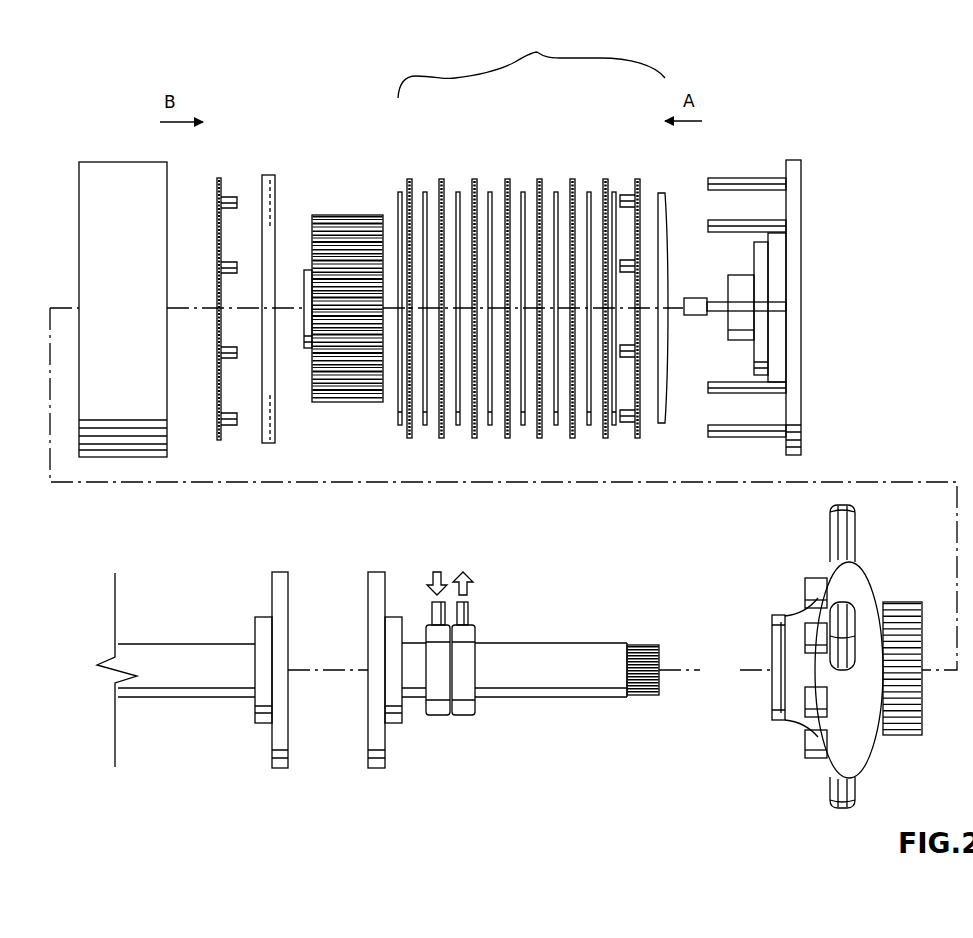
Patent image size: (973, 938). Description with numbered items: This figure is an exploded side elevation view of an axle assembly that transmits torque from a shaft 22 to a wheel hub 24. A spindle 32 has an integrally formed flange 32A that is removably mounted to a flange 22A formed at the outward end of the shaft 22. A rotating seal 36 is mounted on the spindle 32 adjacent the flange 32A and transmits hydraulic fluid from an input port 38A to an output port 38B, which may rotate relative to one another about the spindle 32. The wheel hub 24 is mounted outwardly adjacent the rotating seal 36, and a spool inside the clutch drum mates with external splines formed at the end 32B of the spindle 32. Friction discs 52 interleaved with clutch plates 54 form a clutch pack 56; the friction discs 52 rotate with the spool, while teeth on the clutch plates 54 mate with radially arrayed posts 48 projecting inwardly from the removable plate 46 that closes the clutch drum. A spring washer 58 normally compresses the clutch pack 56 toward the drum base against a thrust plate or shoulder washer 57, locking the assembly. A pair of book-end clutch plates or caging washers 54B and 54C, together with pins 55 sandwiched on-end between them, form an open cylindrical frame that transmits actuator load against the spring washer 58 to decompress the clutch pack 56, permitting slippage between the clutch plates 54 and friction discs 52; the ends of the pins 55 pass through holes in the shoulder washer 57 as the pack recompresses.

The shaft 22 is at (173, 700).
The flange 22A is at (282, 770).
The wheel hub 24 is at (803, 733).
The spindle 32 is at (539, 698).
The flange 32A is at (378, 770).
The end of spindle 32B is at (640, 698).
The rotating seal 36 is at (438, 715).
The input port 38A is at (430, 598).
The output port 38B is at (472, 611).
The plate 46 is at (797, 153).
The posts 48 is at (727, 220).
The friction discs 52 is at (615, 427).
The clutch plates 54 is at (410, 177).
The book-end clutch plate 54B is at (222, 174).
The book-end clutch plate 54C is at (647, 308).
The pins 55 is at (623, 422).
The clutch pack 56 is at (531, 61).
The thrust plate 57 is at (268, 172).
The spring washer 58 is at (667, 190).